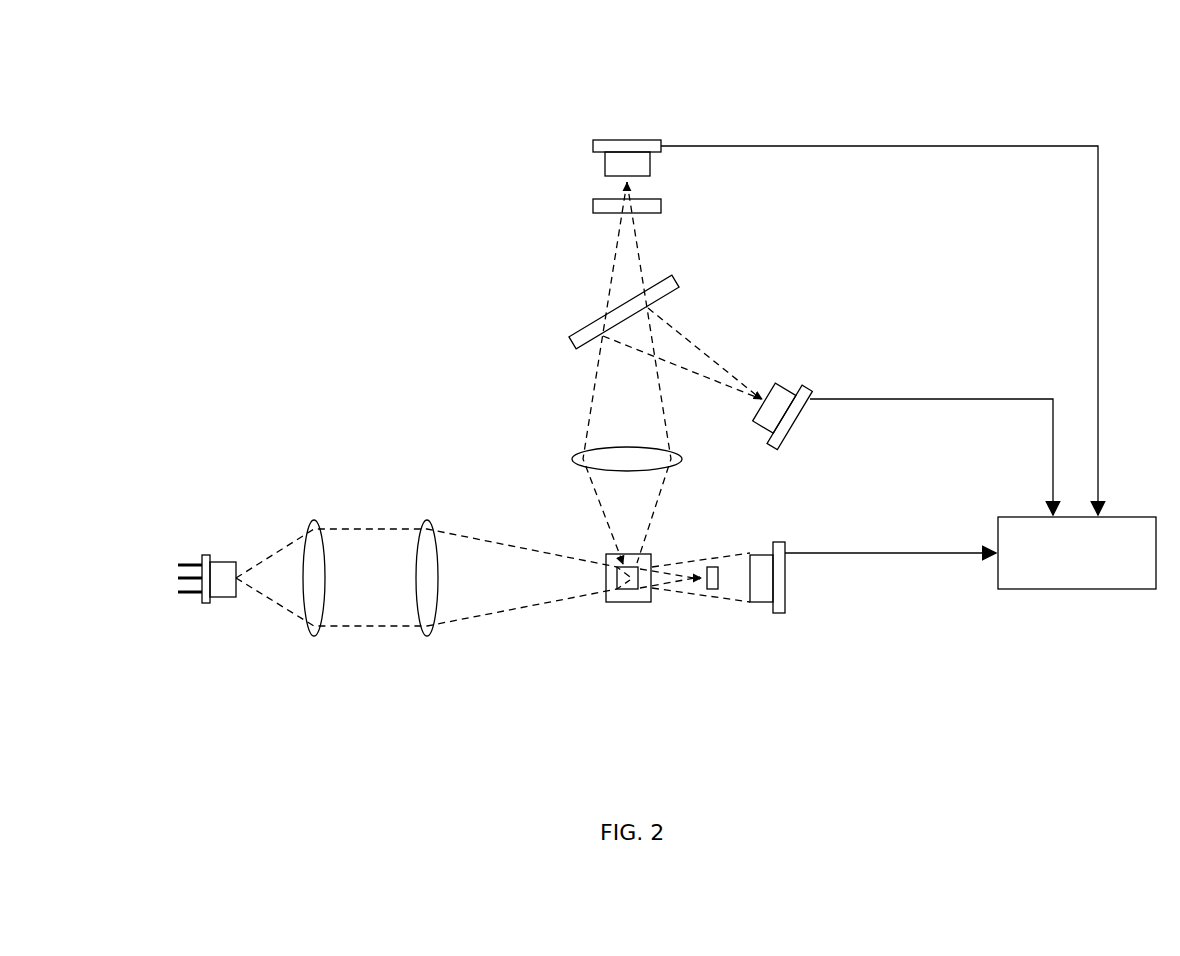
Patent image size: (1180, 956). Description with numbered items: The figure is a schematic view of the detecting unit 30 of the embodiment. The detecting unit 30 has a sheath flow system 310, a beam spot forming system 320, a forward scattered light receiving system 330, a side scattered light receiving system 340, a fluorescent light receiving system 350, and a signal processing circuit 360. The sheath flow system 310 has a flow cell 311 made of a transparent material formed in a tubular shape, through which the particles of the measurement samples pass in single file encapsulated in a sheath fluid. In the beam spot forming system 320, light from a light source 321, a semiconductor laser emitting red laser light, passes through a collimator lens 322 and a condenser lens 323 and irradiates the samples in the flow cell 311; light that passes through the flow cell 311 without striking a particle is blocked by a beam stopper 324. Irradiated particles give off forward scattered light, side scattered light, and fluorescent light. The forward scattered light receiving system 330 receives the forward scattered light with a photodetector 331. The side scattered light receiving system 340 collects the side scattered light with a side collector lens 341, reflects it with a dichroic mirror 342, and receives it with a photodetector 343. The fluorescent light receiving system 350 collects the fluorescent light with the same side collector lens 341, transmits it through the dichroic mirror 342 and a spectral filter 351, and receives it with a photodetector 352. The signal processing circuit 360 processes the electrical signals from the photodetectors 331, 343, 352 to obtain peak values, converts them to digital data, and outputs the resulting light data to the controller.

The detecting unit 30 is at (279, 124).
The sheath flow system 310 is at (606, 612).
The flow cell 311 is at (632, 603).
The beam spot forming system 320 is at (370, 638).
The light source 321 is at (225, 558).
The collimator lens 322 is at (314, 520).
The condenser lens 323 is at (427, 520).
The beam stopper 324 is at (712, 592).
The forward scattered light receiving system 330 is at (763, 625).
The photodetector 331 is at (788, 576).
The side scattered light receiving system 340 is at (762, 342).
The side collector lens 341 is at (577, 458).
The dichroic mirror 342 is at (583, 330).
The photodetector 343 is at (797, 422).
The fluorescent light receiving system 350 is at (683, 117).
The spectral filter 351 is at (661, 205).
The photodetector 352 is at (627, 140).
The signal processing circuit 360 is at (1075, 590).